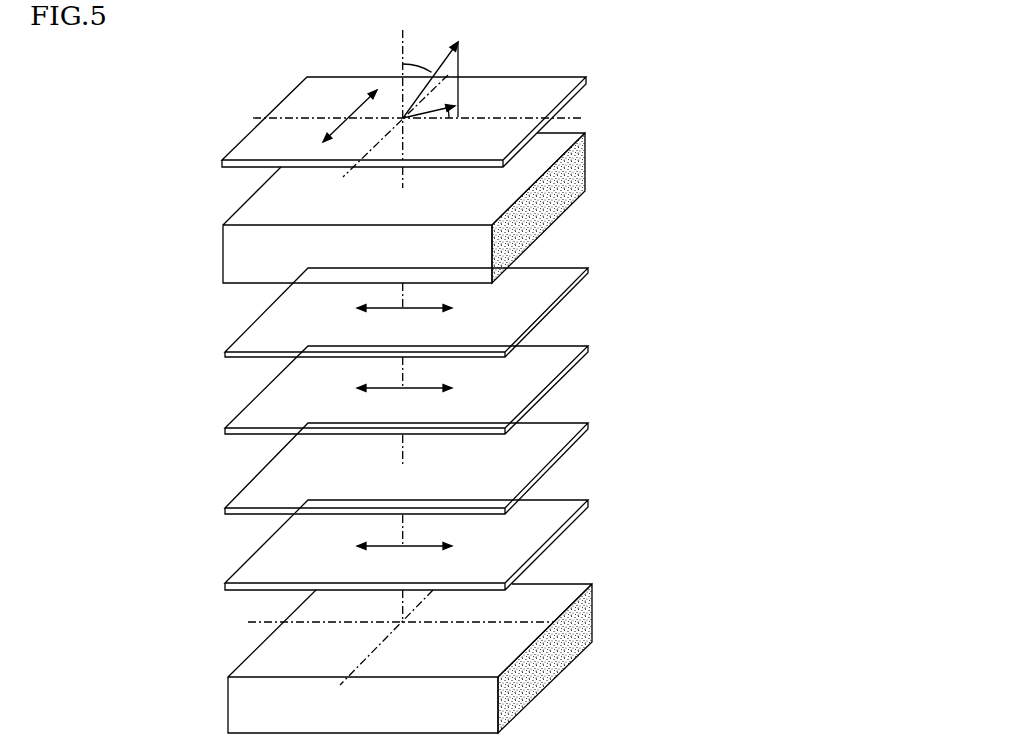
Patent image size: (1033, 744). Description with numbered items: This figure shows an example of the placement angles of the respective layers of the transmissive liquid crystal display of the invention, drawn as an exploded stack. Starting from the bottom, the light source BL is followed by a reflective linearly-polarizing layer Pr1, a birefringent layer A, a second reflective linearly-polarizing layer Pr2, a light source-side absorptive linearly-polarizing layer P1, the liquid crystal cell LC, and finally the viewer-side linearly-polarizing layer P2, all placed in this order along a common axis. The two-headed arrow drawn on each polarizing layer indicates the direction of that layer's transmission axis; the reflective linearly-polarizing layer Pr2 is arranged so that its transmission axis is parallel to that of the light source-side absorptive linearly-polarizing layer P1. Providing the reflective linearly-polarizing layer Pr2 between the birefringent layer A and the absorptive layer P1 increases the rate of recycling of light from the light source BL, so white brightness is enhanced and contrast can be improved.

The viewer-side linearly-polarizing layer P2 is at (557, 113).
The liquid crystal cell LC is at (545, 200).
The light source-side absorptive linearly-polarizing layer P1 is at (557, 302).
The reflective linearly-polarizing layer Pr2 is at (557, 380).
The birefringent layer A is at (565, 455).
The reflective linearly-polarizing layer Pr1 is at (560, 528).
The light source BL is at (557, 645).